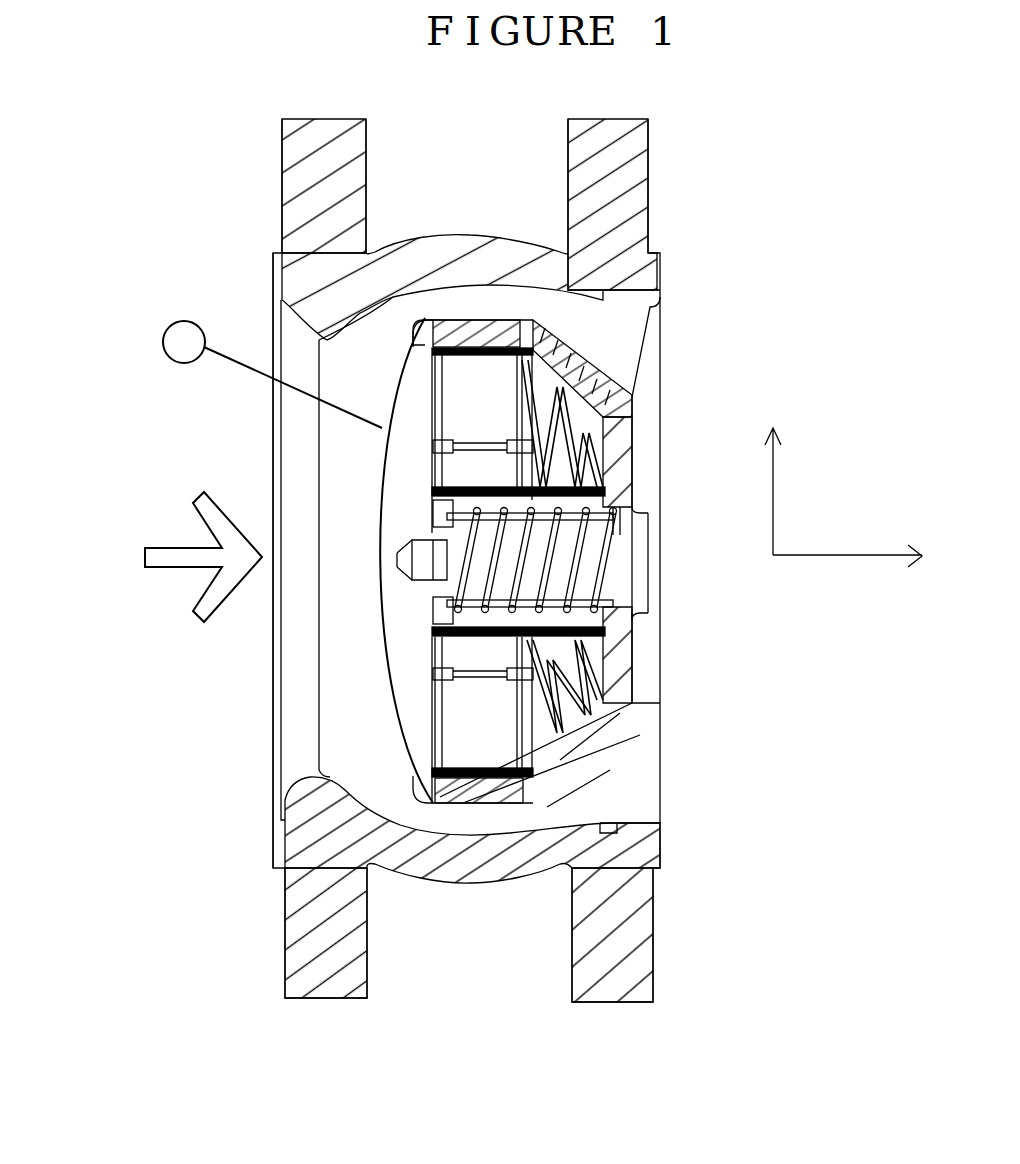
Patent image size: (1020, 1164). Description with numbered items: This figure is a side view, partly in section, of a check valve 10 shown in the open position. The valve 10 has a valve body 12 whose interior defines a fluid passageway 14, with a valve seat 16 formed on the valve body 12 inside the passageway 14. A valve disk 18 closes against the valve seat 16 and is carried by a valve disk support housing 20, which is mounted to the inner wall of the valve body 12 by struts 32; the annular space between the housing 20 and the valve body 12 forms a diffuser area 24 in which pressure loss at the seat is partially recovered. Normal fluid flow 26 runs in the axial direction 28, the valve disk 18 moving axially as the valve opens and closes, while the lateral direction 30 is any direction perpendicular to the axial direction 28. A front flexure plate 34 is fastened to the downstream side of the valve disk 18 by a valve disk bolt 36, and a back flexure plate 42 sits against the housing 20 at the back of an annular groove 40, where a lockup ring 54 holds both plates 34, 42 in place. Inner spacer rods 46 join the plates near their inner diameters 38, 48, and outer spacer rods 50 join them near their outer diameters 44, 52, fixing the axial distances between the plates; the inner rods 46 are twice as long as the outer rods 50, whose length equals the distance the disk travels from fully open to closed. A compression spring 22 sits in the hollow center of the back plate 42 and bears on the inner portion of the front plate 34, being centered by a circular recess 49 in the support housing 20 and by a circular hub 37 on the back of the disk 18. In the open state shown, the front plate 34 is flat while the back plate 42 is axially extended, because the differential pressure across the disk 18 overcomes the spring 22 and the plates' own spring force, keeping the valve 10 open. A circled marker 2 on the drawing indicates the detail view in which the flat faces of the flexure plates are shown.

The section line of FIG. 2 is at (272, 374).
The valve 10 is at (257, 887).
The valve body 12 is at (660, 210).
The fluid passageway 14 is at (345, 672).
The valve seat 16 is at (368, 805).
The valve disk 18 is at (345, 735).
The valve disk support housing 20 is at (645, 422).
The compression spring 22 is at (447, 530).
The diffuser area 24 is at (548, 305).
The normal fluid flow 26 is at (160, 547).
The axial direction 28 is at (866, 552).
The lateral direction 30 is at (800, 472).
The struts 32 is at (661, 355).
The front flexure plate 34 is at (433, 395).
The valve disk bolt 36 is at (395, 555).
The circular hub 37 is at (433, 610).
The inner diameter of front flexure plate 38 is at (440, 575).
The annular groove 40 is at (462, 338).
The back flexure plate 42 is at (600, 700).
The outer diameter of front flexure plate 44 is at (492, 330).
The inner spacer rods 46 is at (433, 445).
The inner diameter of back flexure plate 48 is at (632, 613).
The circular recess 49 is at (627, 513).
The outer spacer rods 50 is at (600, 397).
The outer diameter of back flexure plate 52 is at (455, 795).
The lockup ring 54 is at (360, 833).